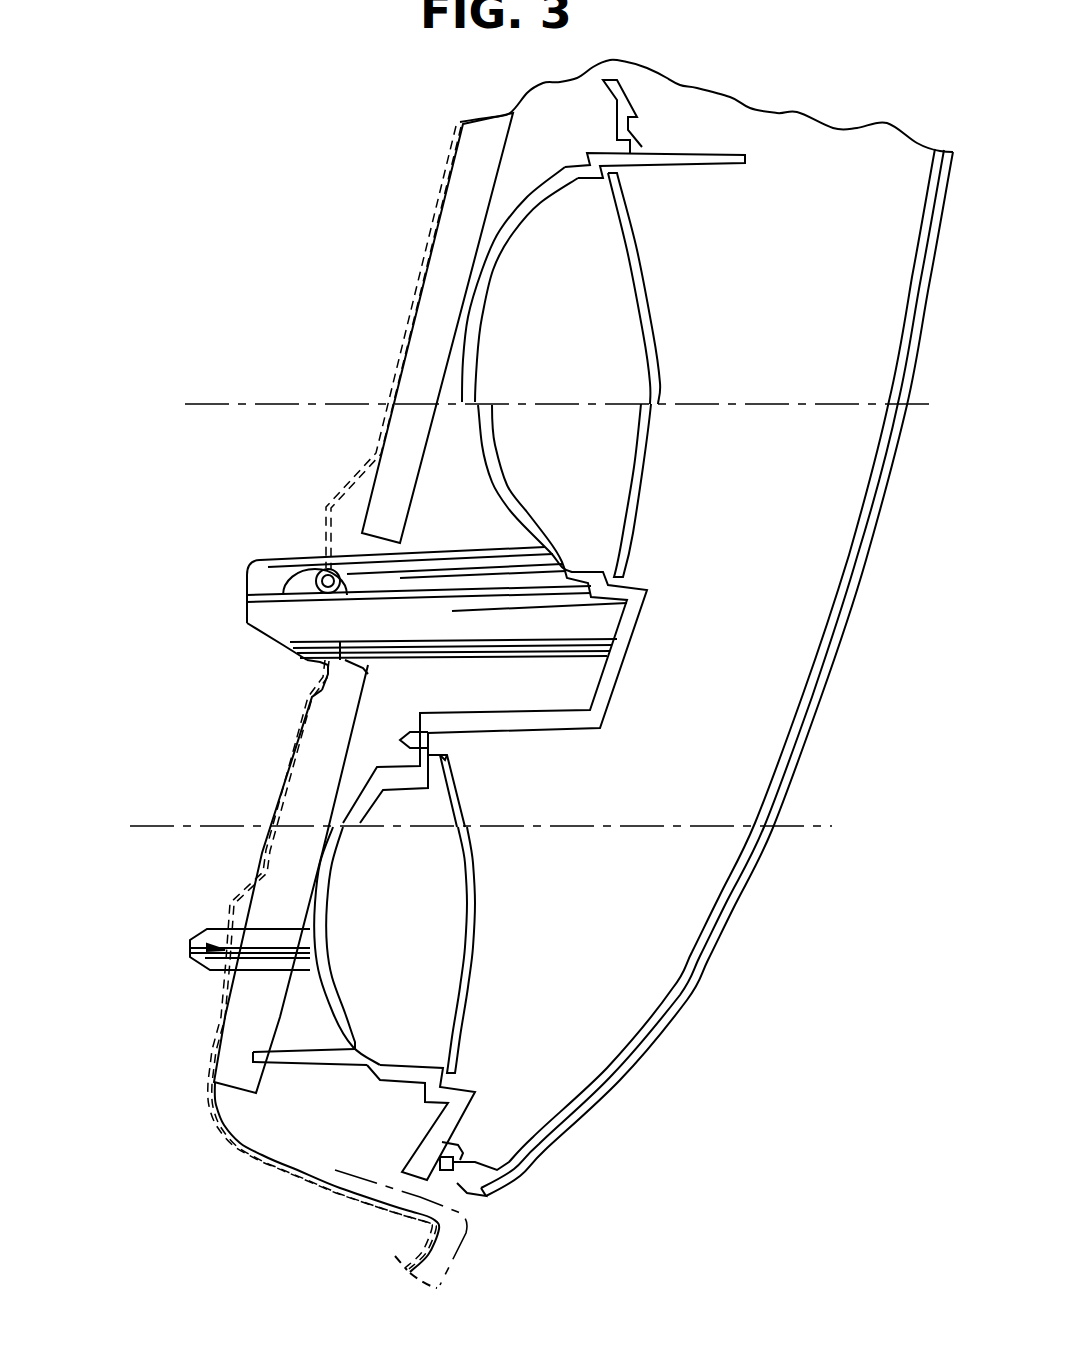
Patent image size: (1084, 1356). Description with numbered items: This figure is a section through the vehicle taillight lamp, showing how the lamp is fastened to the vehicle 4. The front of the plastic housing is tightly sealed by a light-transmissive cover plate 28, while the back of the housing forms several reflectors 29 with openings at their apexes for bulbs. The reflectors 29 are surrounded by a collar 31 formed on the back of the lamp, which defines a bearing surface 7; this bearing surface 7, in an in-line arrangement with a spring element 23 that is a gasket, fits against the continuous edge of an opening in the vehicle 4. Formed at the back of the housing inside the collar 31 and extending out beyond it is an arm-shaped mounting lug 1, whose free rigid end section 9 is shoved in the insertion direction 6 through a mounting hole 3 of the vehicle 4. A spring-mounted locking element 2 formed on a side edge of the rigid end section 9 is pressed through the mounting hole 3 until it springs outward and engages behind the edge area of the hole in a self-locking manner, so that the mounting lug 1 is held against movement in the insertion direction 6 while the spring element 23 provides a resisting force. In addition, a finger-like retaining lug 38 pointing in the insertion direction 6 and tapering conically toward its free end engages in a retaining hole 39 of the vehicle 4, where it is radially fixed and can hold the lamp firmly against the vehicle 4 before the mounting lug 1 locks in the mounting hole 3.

The mounting lug 1 is at (433, 625).
The locking element 2 is at (300, 559).
The mounting hole 3 is at (312, 662).
The vehicle 4 is at (283, 795).
The insertion direction 6 is at (355, 360).
The bearing surface 7 is at (413, 302).
The rigid end section 9 is at (287, 617).
The spring element 23 is at (237, 1073).
The cover plate 28 is at (793, 775).
The reflector 29 is at (330, 997).
The collar 31 is at (291, 1062).
The retaining lug 38 is at (207, 946).
The retaining hole 39 is at (228, 966).